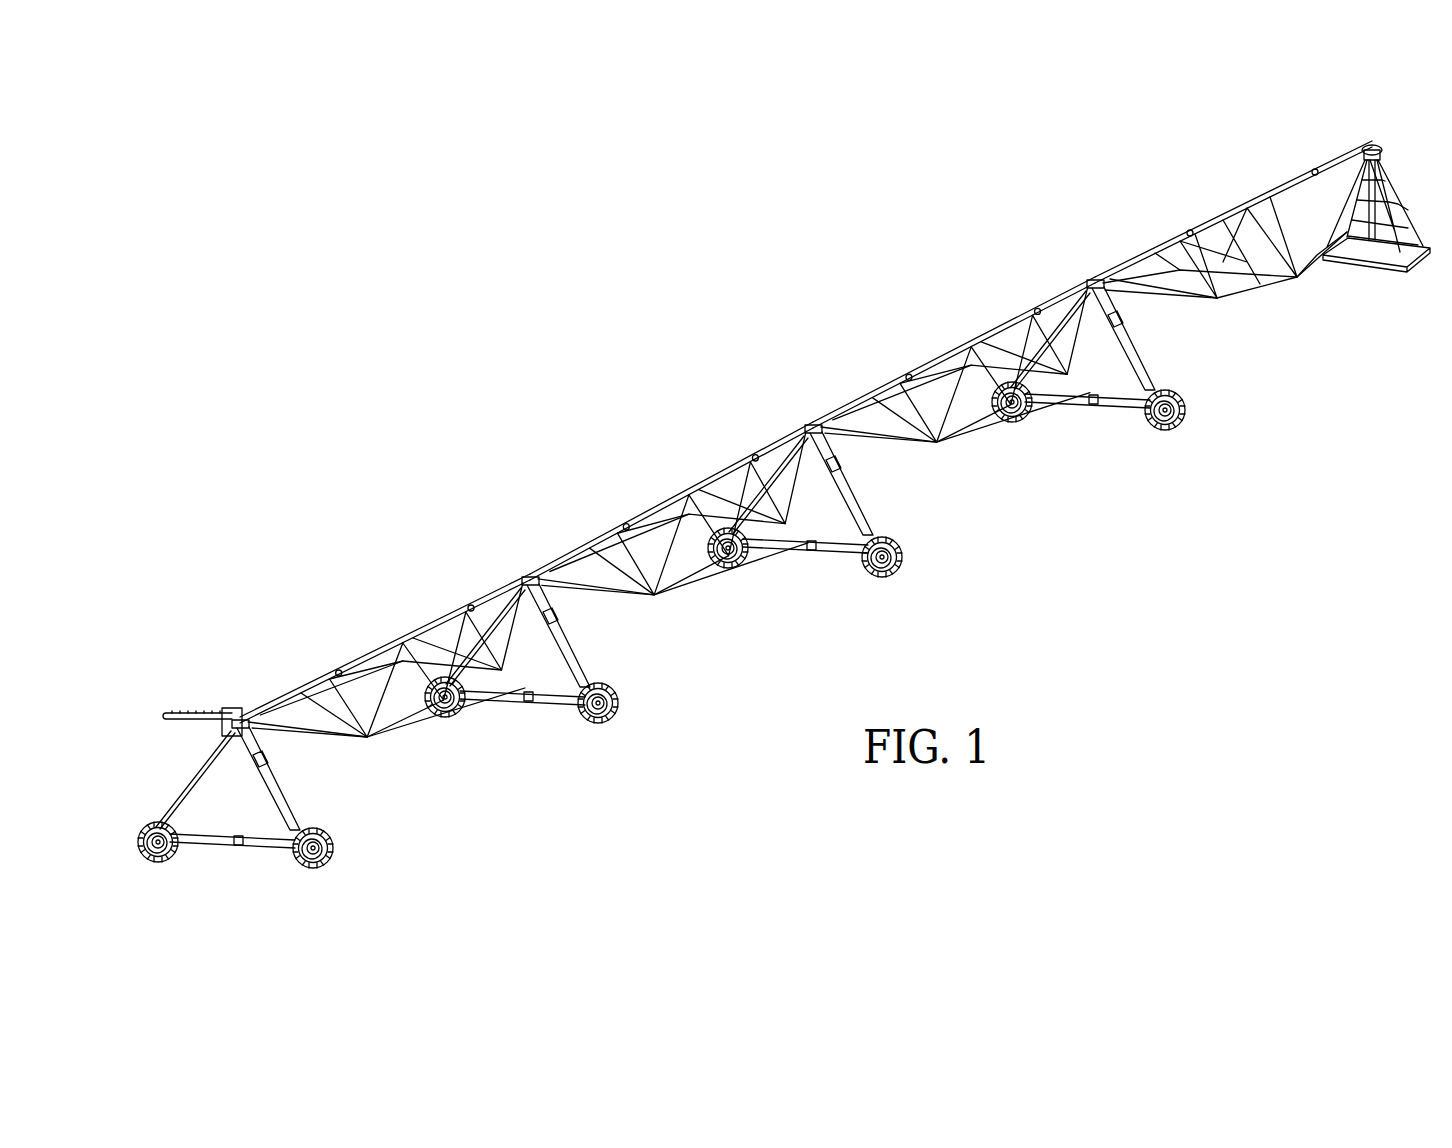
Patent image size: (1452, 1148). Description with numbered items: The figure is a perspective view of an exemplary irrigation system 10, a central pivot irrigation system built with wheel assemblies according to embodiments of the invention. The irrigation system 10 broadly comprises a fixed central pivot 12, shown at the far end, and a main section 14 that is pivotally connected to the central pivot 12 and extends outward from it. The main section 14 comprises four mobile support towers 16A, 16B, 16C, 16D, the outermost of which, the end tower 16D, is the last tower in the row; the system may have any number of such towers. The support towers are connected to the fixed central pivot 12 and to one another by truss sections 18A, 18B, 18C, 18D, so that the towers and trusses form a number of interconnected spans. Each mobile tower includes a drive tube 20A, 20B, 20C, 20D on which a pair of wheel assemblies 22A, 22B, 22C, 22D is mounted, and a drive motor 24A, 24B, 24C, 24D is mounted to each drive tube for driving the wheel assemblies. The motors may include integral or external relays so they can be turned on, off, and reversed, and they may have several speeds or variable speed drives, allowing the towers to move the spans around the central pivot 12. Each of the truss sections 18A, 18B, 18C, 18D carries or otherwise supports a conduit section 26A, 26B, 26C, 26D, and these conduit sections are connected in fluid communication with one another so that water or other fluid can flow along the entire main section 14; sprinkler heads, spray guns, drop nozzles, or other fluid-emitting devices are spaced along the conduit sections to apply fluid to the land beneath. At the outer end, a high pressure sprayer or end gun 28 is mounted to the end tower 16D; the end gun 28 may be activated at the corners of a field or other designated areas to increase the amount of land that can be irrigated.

The irrigation system 10 is at (806, 428).
The central pivot 12 is at (1402, 183).
The main section 14 is at (806, 428).
The mobile support tower 16A is at (1131, 317).
The mobile support tower 16B is at (847, 463).
The mobile support tower 16C is at (565, 609).
The end tower 16D is at (279, 756).
The truss section 18A is at (1211, 318).
The truss section 18B is at (953, 465).
The truss section 18C is at (660, 610).
The truss section 18D is at (408, 745).
The drive tube 20A is at (1140, 390).
The drive tube 20B is at (852, 535).
The drive tube 20C is at (570, 688).
The drive tube 20D is at (282, 836).
The wheel assembly 22A is at (1028, 422).
The wheel assembly 22B is at (742, 568).
The wheel assembly 22C is at (456, 715).
The wheel assembly 22D is at (170, 862).
The drive motor 24A is at (1095, 408).
The drive motor 24B is at (812, 554).
The drive motor 24C is at (530, 702).
The drive motor 24D is at (243, 850).
The conduit section 26A is at (1277, 188).
The conduit section 26B is at (1030, 330).
The conduit section 26C is at (703, 472).
The conduit section 26D is at (452, 600).
The end gun 28 is at (198, 712).